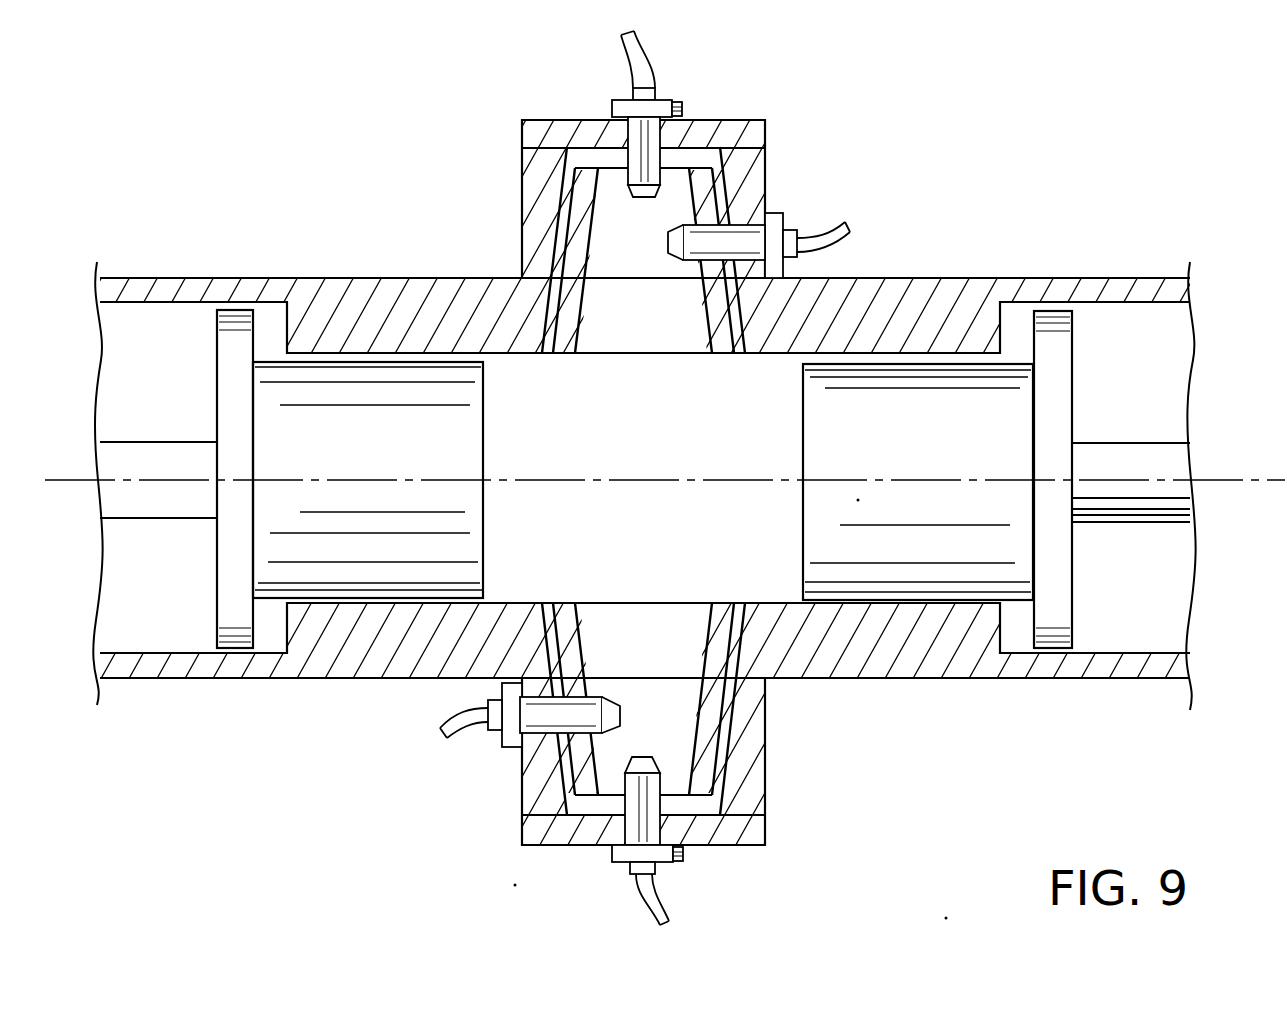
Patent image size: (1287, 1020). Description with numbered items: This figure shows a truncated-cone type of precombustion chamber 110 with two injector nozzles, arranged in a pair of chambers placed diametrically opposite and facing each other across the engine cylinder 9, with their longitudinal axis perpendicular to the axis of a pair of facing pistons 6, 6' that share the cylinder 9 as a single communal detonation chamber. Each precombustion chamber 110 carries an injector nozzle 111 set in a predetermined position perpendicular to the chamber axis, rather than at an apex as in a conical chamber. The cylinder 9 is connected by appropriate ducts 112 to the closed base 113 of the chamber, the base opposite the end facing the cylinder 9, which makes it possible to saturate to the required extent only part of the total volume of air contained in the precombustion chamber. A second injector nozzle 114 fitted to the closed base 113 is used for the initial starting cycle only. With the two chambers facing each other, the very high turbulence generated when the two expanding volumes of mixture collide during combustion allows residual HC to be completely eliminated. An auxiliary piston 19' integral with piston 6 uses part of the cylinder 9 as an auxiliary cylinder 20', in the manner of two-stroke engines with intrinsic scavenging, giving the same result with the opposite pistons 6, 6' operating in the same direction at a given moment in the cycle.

The cylinder 9 is at (624, 461).
The piston 6 is at (390, 480).
The piston 6' is at (883, 482).
The auxiliary piston 19' is at (644, 479).
The auxiliary cylinder 20' is at (644, 486).
The precombustion chamber 110 is at (668, 327).
The injector nozzle 111 is at (772, 215).
The ducts 112 is at (542, 355).
The closed base 113 is at (606, 153).
The second injector nozzle 114 is at (675, 116).